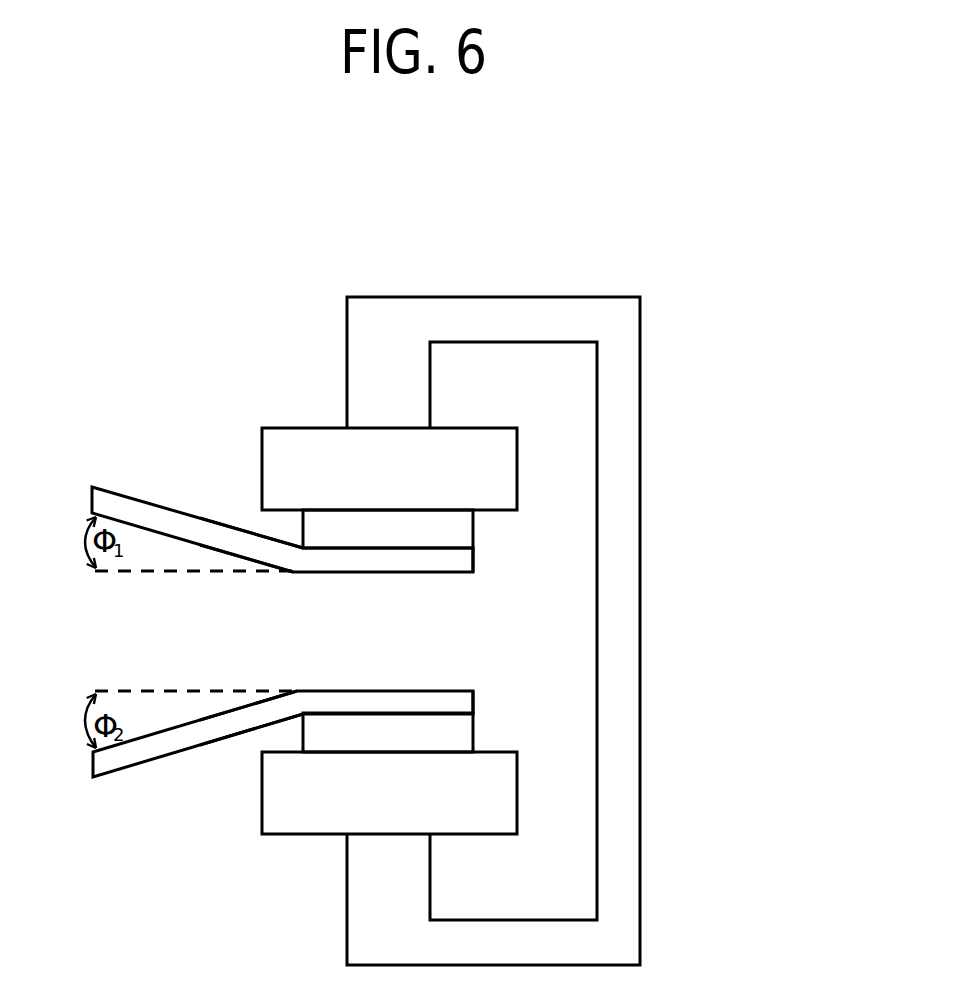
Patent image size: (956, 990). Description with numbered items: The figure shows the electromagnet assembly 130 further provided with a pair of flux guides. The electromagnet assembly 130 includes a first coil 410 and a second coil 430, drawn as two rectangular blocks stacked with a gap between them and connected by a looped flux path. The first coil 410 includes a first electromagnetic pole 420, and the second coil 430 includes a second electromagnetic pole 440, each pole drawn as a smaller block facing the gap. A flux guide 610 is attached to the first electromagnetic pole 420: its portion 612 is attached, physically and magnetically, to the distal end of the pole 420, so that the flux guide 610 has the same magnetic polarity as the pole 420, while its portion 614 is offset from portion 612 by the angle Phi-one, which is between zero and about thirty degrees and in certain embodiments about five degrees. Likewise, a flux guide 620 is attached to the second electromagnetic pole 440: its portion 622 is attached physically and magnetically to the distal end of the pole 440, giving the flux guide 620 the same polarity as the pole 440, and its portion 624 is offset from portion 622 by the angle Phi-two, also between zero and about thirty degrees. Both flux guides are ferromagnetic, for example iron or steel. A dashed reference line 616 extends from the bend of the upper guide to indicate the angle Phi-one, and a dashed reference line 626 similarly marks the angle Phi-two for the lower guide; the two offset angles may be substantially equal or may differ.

The electromagnet assembly 130 is at (640, 523).
The first coil 410 is at (412, 484).
The first electromagnetic pole 420 is at (412, 539).
The second coil 430 is at (412, 810).
The second electromagnetic pole 440 is at (412, 747).
The flux guide 610 is at (112, 490).
The portion of flux guide 610 612 is at (463, 563).
The portion of flux guide 610 614 is at (253, 553).
The first reference plane 616 is at (145, 574).
The flux guide 620 is at (98, 778).
The portion of flux guide 620 622 is at (390, 702).
The portion of flux guide 620 624 is at (267, 710).
The second reference plane 626 is at (202, 691).